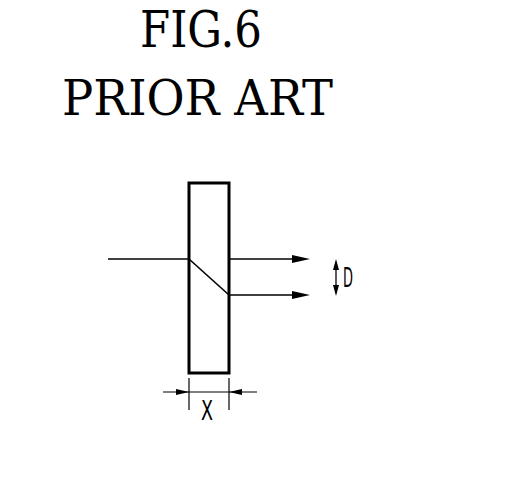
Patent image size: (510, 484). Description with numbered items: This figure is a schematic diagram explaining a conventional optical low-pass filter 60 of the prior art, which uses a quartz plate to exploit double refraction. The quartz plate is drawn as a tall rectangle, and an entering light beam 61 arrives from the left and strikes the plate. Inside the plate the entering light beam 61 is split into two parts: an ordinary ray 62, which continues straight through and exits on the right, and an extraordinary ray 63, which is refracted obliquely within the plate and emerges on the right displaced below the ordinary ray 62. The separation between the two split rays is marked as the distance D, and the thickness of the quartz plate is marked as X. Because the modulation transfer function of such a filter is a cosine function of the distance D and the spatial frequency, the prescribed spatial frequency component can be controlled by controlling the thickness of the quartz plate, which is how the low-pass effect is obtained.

The conventional optical low-pass filter 60 is at (245, 207).
The entering light beam 61 is at (125, 262).
The ordinary ray 62 is at (273, 256).
The extraordinary ray 63 is at (275, 298).